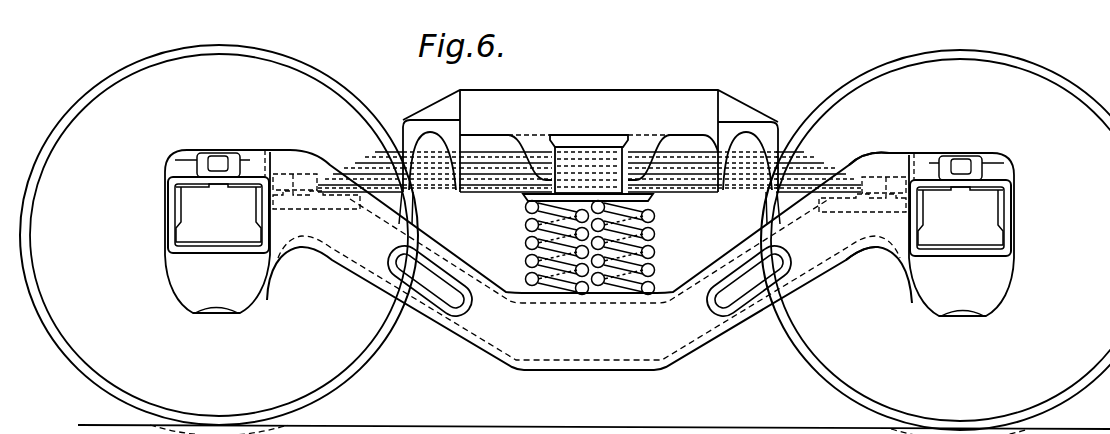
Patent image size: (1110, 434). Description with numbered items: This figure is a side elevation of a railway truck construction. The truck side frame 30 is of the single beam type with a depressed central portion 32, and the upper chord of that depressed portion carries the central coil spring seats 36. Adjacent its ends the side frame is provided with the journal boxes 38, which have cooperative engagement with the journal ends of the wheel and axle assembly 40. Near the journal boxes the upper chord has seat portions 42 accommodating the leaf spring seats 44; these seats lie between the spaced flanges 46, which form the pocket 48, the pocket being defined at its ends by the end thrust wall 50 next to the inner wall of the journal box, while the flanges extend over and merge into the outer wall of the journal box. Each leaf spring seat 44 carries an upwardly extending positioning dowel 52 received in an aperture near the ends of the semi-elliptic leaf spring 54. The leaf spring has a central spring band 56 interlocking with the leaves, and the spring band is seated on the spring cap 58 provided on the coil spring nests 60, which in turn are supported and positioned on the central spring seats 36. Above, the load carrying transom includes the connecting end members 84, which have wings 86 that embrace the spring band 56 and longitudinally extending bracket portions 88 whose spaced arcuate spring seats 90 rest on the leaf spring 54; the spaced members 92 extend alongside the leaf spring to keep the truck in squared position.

The truck side frame 30 is at (683, 345).
The depressed central portion 32 is at (497, 347).
The central coil spring seats 36 is at (613, 296).
The journal boxes 38 is at (188, 292).
The wheel and axle assembly 40 is at (120, 87).
The seat portions 42 is at (835, 204).
The leaf spring seats 44 is at (884, 212).
The spaced flanges 46 is at (885, 170).
The pocket 48 is at (900, 181).
The end thrust wall 50 is at (913, 174).
The positioning dowel 52 is at (873, 163).
The semi-elliptic leaf spring 54 is at (363, 170).
The central spring band 56 is at (587, 149).
The spring cap 58 is at (650, 198).
The coil spring nests 60 is at (525, 243).
The connecting end members 84 is at (523, 98).
The wings 86 is at (638, 146).
The longitudinally extending bracket portions 88 is at (697, 103).
The spaced arcuate spring seats 90 is at (737, 190).
The spaced members 92 is at (741, 180).